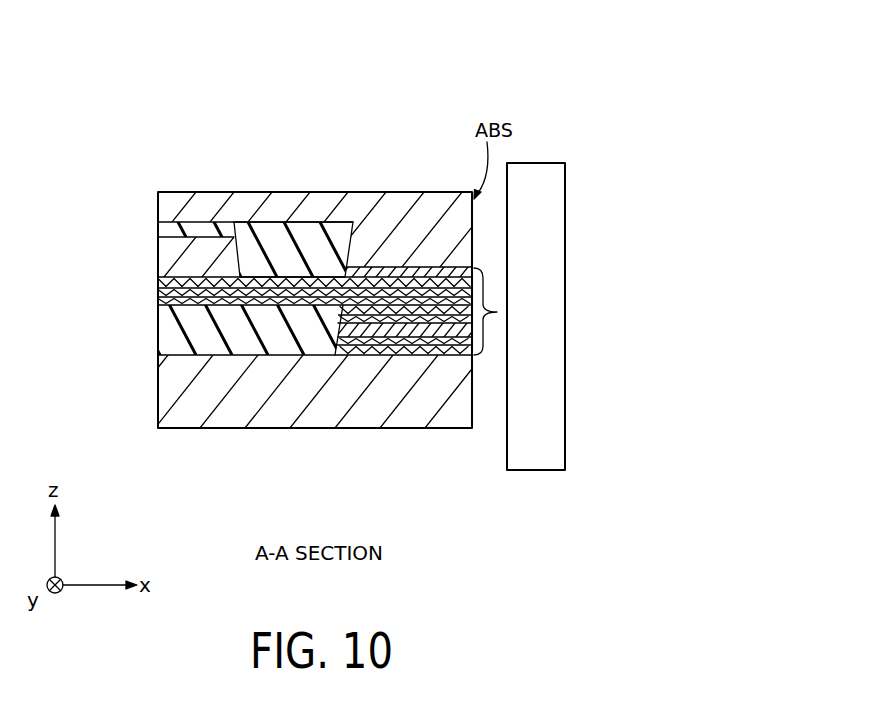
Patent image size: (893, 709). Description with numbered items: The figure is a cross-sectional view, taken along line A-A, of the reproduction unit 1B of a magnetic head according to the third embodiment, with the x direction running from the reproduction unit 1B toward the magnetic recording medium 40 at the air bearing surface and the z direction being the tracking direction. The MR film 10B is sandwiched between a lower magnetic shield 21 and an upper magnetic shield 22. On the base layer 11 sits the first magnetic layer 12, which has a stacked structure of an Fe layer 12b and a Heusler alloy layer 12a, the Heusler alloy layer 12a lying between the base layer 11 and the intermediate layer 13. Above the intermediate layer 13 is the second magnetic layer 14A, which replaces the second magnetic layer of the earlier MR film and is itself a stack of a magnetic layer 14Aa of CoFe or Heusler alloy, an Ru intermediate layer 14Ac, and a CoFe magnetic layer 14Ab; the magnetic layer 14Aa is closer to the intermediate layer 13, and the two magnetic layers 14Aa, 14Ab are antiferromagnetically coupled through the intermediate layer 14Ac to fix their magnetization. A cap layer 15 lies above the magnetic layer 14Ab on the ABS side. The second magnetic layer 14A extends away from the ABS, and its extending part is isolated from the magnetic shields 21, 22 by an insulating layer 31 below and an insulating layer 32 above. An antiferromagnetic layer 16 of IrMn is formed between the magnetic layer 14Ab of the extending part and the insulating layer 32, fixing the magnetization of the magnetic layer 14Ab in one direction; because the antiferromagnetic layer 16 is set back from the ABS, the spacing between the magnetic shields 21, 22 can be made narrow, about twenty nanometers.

The reproduction unit 1B is at (449, 70).
The magnetic shield 22 is at (163, 203).
The insulating layer 32 is at (163, 232).
The antiferromagnetic layer 16 is at (165, 262).
The second magnetic layer 14A is at (410, 140).
The magnetic layer 14Aa is at (262, 303).
The intermediate layer 14Ac is at (310, 287).
The magnetic layer 14Ab is at (383, 283).
The cap layer 15 is at (452, 272).
The insulating layer 31 is at (163, 339).
The magnetic shield 21 is at (163, 397).
The intermediate layer 13 is at (348, 348).
The Heusler alloy layer 12a is at (352, 326).
The Fe layer 12b is at (392, 340).
The first magnetic layer 12 is at (420, 472).
The base layer 11 is at (440, 352).
The MR film 10B is at (497, 313).
The magnetic recording medium 40 is at (552, 251).